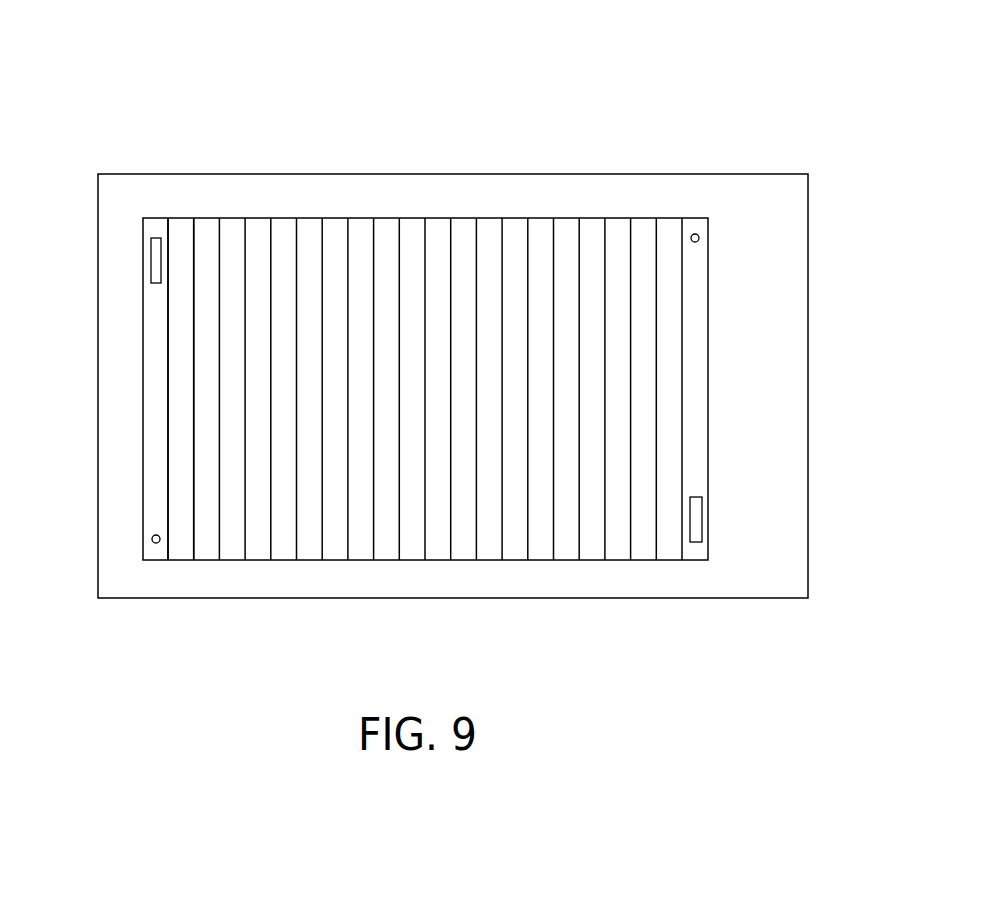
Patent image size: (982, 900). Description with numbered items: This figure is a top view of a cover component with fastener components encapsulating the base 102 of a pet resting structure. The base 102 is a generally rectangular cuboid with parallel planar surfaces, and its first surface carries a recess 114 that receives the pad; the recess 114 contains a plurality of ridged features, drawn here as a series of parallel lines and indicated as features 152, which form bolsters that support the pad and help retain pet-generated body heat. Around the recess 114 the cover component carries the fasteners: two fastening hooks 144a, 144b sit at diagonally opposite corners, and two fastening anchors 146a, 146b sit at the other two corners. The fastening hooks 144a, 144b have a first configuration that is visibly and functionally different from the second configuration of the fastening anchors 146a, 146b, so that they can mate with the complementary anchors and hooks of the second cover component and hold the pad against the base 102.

The base 102 is at (762, 78).
The recess 114 is at (233, 223).
The channels / fins 152 is at (198, 350).
The fastening hook 144a is at (698, 558).
The fastening hook 144b is at (153, 223).
The fastening anchor 146a is at (696, 220).
The fastening anchor 146b is at (154, 558).